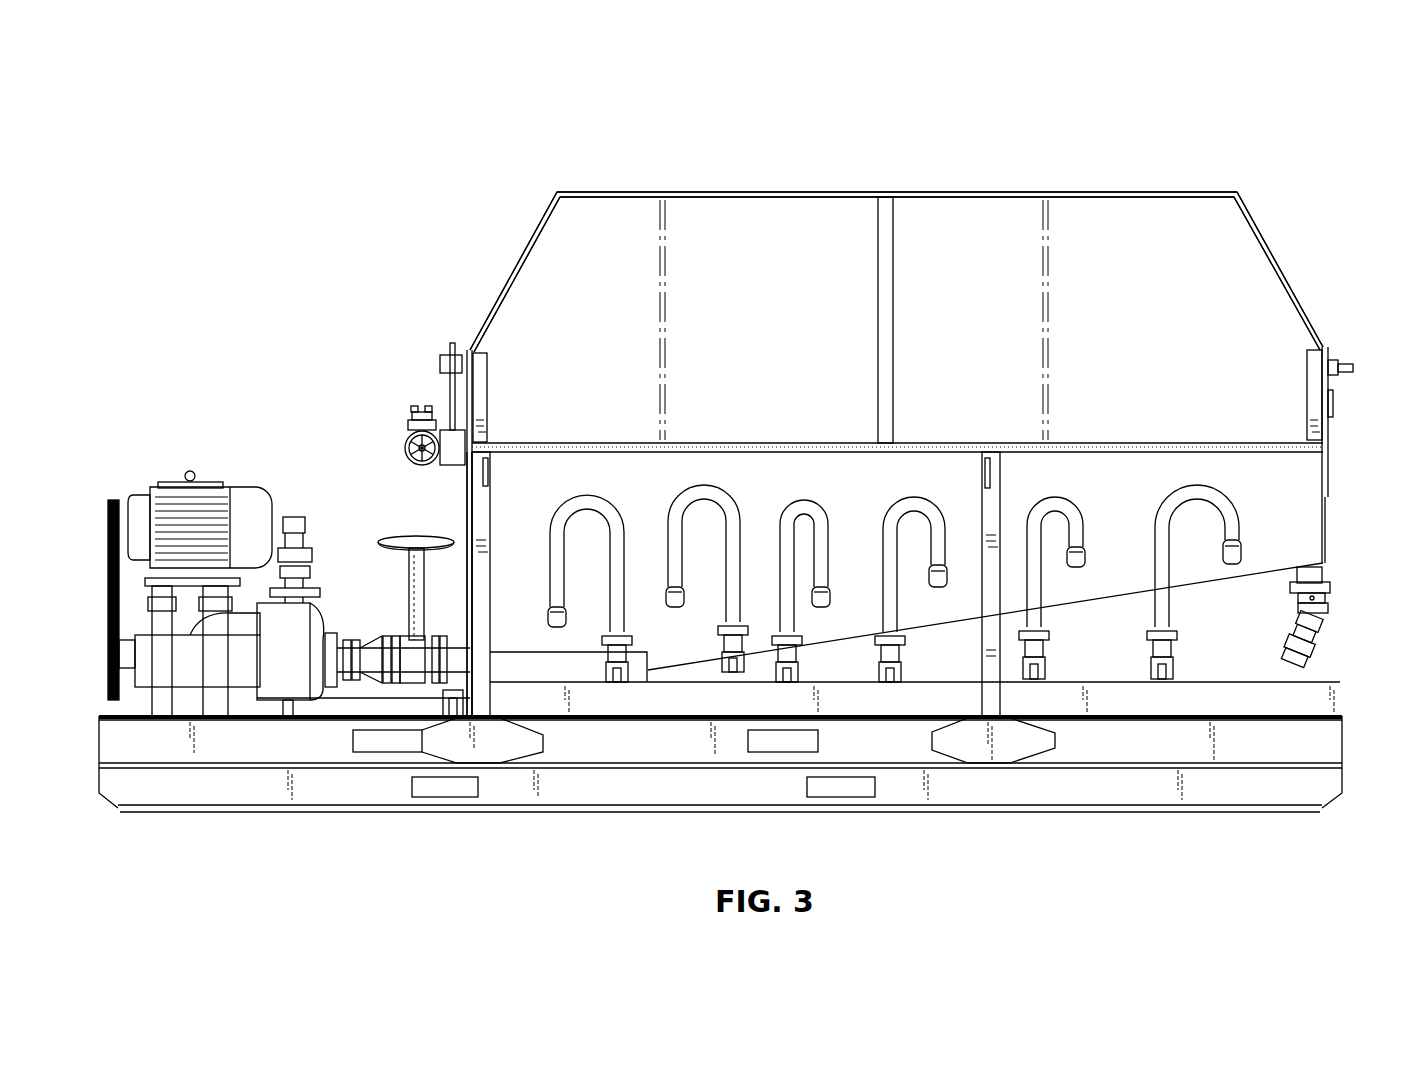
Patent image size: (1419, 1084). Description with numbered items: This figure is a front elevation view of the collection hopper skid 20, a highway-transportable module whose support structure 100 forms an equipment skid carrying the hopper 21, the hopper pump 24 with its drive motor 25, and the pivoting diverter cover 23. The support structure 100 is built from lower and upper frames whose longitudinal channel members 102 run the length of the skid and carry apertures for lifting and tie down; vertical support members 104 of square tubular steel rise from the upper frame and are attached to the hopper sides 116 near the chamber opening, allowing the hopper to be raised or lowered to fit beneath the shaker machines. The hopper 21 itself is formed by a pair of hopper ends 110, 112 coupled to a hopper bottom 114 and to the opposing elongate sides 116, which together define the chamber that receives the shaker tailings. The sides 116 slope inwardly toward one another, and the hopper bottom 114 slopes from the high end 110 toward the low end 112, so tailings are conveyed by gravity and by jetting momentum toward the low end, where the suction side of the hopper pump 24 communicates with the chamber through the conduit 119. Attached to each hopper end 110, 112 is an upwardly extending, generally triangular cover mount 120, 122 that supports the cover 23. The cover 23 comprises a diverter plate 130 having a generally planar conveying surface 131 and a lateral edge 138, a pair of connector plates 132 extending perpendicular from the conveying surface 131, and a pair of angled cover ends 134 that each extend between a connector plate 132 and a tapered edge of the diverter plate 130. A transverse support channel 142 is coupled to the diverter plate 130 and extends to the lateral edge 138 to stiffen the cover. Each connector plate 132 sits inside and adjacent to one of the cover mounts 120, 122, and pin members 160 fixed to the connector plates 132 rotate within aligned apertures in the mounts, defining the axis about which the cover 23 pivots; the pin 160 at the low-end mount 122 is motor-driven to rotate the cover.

The collection hopper skid 20 is at (1256, 119).
The hopper 21 is at (1313, 540).
The diverter cover 23 is at (1160, 190).
The hopper pump 24 is at (300, 692).
The motor 25 is at (248, 490).
The support structure 100 is at (1070, 785).
The longitudinal channel members 102 is at (1225, 790).
The vertical support members 104 is at (483, 500).
The hopper end 110 is at (1327, 514).
The hopper end 112 is at (469, 517).
The hopper bottom 114 is at (1225, 582).
The hopper sides 116 is at (1312, 472).
The conduit 119 is at (460, 655).
The cover mount 120 is at (1324, 347).
The cover mount 122 is at (467, 347).
The diverter plate 130 is at (633, 210).
The conveying surface 131 is at (753, 297).
The connector plates 132 is at (481, 385).
The angled cover ends 134 is at (511, 266).
The lateral edge 138 is at (773, 190).
The transverse support channel 142 is at (890, 250).
The pin members 160 is at (1346, 376).